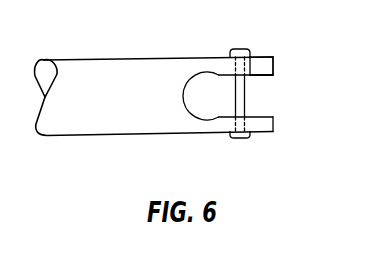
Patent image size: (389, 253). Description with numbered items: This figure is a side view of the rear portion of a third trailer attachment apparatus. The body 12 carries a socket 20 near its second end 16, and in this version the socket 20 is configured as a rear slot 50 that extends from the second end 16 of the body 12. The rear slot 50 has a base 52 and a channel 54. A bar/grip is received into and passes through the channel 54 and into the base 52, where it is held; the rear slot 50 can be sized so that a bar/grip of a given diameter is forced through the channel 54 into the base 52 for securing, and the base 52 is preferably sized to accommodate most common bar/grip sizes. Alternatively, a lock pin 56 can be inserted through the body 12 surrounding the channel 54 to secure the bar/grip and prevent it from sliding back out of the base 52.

The body 12 is at (85, 64).
The second end 16 is at (273, 68).
The socket 20 is at (266, 105).
The rear slot 50 is at (263, 76).
The base 52 is at (188, 58).
The channel 54 is at (252, 57).
The lock pin 56 is at (238, 49).